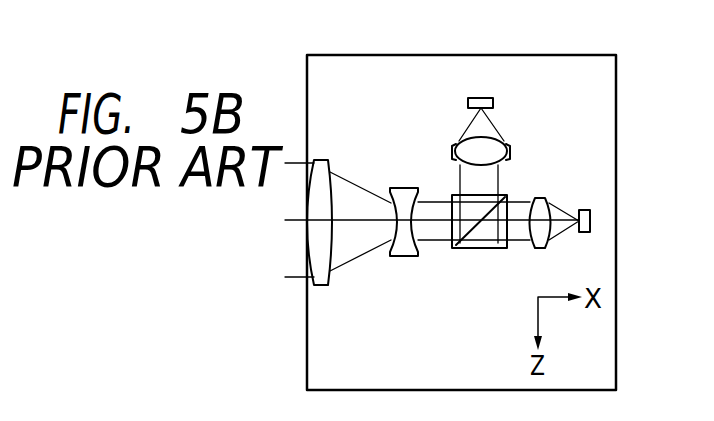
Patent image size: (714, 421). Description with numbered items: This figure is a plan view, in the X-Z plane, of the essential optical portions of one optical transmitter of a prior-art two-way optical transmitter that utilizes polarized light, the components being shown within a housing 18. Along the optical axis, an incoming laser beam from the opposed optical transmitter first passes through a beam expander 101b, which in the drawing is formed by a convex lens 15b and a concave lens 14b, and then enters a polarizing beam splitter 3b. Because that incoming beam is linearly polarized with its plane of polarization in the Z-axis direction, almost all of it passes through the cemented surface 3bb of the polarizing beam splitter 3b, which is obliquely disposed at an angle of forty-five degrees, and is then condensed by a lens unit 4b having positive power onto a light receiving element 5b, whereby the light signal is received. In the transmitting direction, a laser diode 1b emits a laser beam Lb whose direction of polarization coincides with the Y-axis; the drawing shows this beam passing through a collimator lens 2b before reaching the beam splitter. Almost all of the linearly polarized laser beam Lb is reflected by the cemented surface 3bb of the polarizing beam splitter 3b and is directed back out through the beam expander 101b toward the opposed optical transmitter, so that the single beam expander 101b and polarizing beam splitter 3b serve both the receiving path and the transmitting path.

The laser diode 1b is at (495, 104).
The collimator lens 2b is at (509, 151).
The polarizing beam splitter 3b is at (489, 252).
The cemented surface 3bb is at (470, 250).
The lens unit 4b is at (539, 249).
The light receiving element 5b is at (588, 208).
The concave lens of beam expander 14b is at (408, 186).
The convex lens of beam expander 15b is at (318, 158).
The beam expander 101b is at (425, 104).
The laser beam Lb is at (468, 127).
The housing 18 is at (307, 373).